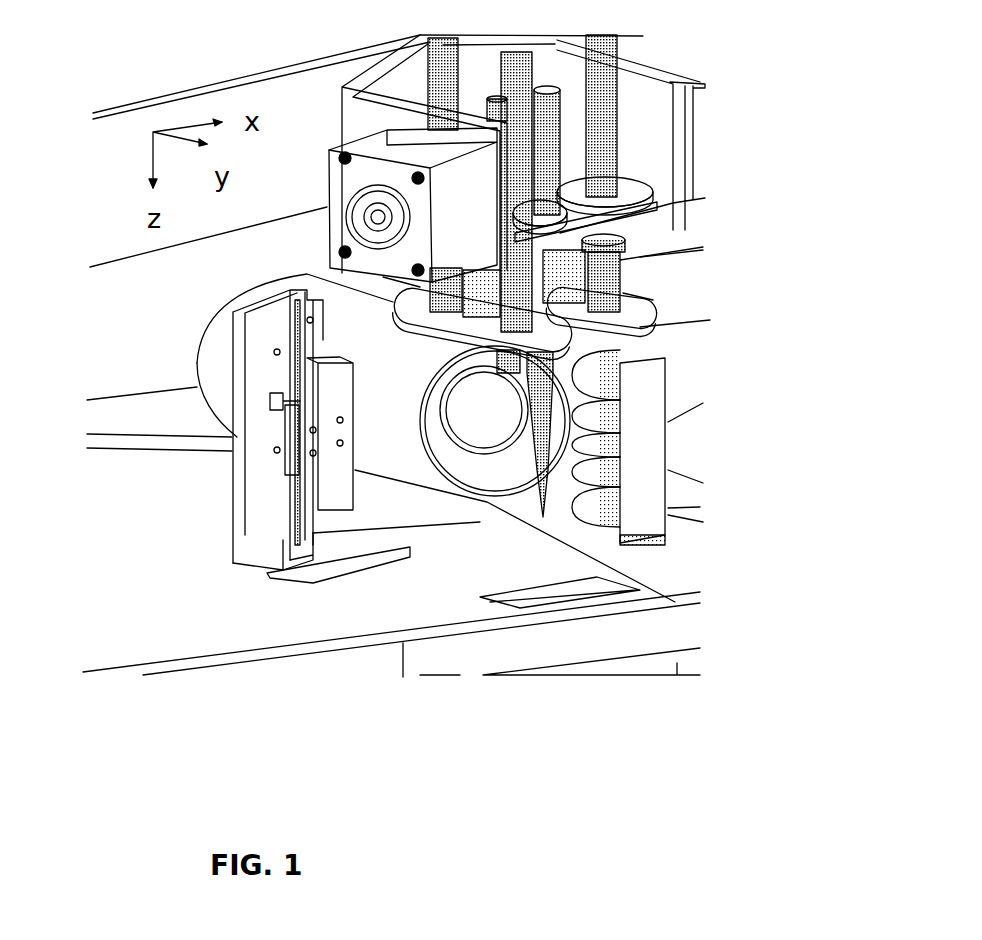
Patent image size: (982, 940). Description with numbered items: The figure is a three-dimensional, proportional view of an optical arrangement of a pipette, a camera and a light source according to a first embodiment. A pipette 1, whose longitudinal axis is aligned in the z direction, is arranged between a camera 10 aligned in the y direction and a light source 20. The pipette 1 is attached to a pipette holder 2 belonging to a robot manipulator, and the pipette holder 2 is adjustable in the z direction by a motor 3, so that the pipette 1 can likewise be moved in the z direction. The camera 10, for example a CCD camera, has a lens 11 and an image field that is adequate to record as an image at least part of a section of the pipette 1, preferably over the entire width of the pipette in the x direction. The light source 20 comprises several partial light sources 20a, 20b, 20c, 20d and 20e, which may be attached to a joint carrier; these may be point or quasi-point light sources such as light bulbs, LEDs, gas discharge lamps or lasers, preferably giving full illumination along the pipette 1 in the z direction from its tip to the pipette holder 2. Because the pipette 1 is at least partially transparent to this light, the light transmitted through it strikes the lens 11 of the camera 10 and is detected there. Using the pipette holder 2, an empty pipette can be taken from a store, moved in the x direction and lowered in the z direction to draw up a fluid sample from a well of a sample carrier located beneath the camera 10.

The pipette 1 is at (537, 512).
The pipette holder 2 is at (490, 106).
The motor 3 is at (362, 197).
The camera 10 is at (393, 348).
The lens 11 is at (480, 425).
The light source 20 is at (598, 533).
The partial light source 20a is at (588, 381).
The partial light source 20b is at (600, 416).
The partial light source 20c is at (600, 447).
The partial light source 20d is at (600, 471).
The partial light source 20e is at (620, 511).